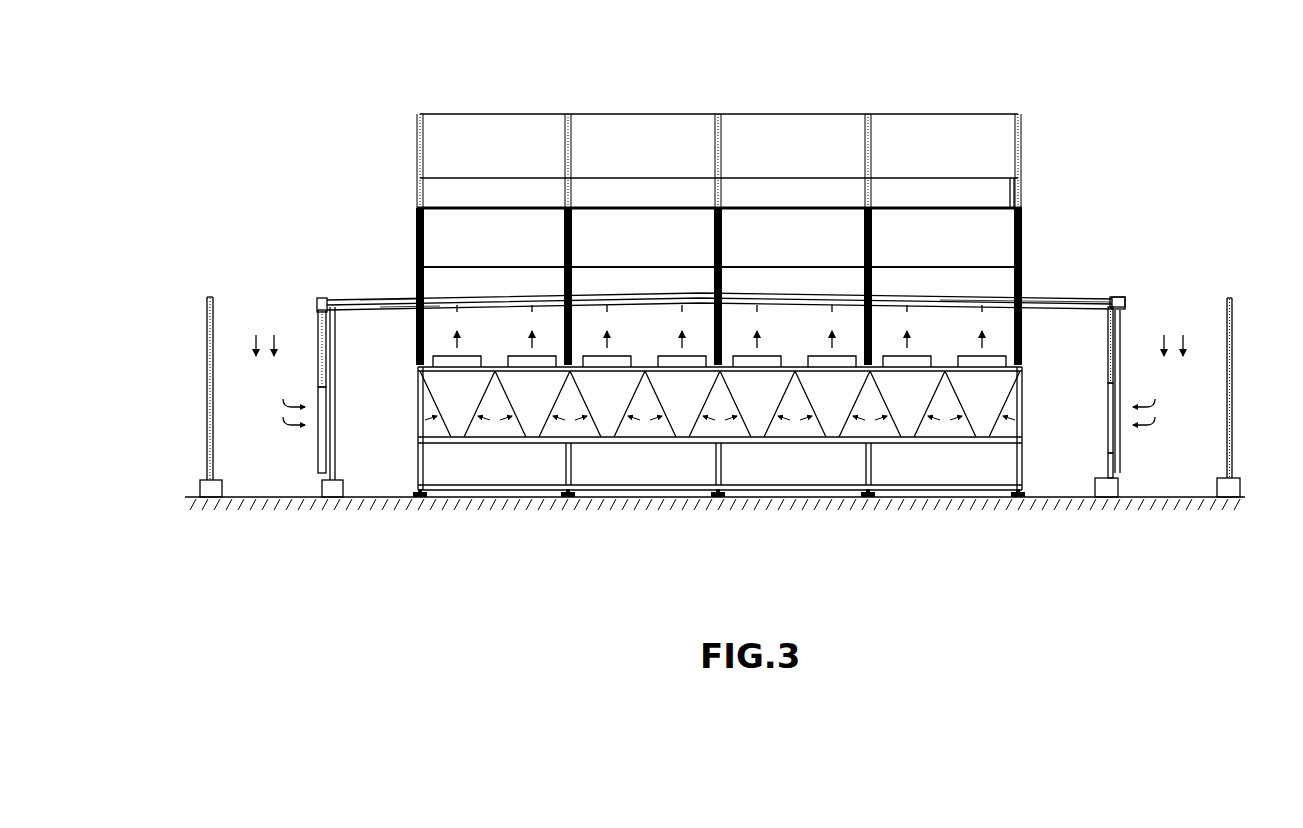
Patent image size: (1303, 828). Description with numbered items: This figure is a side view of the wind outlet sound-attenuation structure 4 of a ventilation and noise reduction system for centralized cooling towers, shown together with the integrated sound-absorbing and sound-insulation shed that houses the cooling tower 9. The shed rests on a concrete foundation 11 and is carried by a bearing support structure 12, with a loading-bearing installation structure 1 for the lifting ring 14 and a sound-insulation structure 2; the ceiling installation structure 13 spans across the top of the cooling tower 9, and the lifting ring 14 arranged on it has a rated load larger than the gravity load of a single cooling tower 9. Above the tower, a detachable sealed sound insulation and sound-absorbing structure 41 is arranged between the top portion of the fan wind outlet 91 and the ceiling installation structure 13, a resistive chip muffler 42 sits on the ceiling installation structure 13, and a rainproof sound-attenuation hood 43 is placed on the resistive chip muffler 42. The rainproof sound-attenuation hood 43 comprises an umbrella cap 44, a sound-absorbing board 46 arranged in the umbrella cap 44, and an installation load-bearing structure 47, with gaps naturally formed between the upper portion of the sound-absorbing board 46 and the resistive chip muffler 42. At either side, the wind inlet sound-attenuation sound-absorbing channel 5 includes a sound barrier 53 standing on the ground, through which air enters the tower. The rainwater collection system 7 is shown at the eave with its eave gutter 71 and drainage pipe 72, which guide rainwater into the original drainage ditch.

The loading-bearing installation structure 1 is at (370, 302).
The sound-insulation structure 2 is at (400, 298).
The wind outlet sound-attenuation structure 4 is at (462, 220).
The wind inlet sound-attenuation sound-absorbing channel 5 is at (263, 330).
The rainwater collection system 7 is at (1117, 322).
The cooling tower 9 is at (465, 400).
The concrete foundation 11 is at (332, 488).
The bearing support structure 12 is at (335, 430).
The ceiling installation structure 13 is at (388, 304).
The lifting ring 14 is at (988, 300).
The detachable sealed sound insulation and sound-absorbing structure 41 is at (418, 325).
The resistive chip muffler 42 is at (484, 258).
The rainproof sound-attenuation hood 43 is at (488, 137).
The umbrella cap 44 is at (663, 115).
The sound-absorbing board 46 is at (567, 133).
The installation load-bearing structure 47 is at (1012, 190).
The sound barrier 53 is at (207, 352).
The eave gutter 71 is at (1117, 300).
The drainage pipe 72 is at (1117, 380).
The fan wind outlet 91 is at (455, 362).